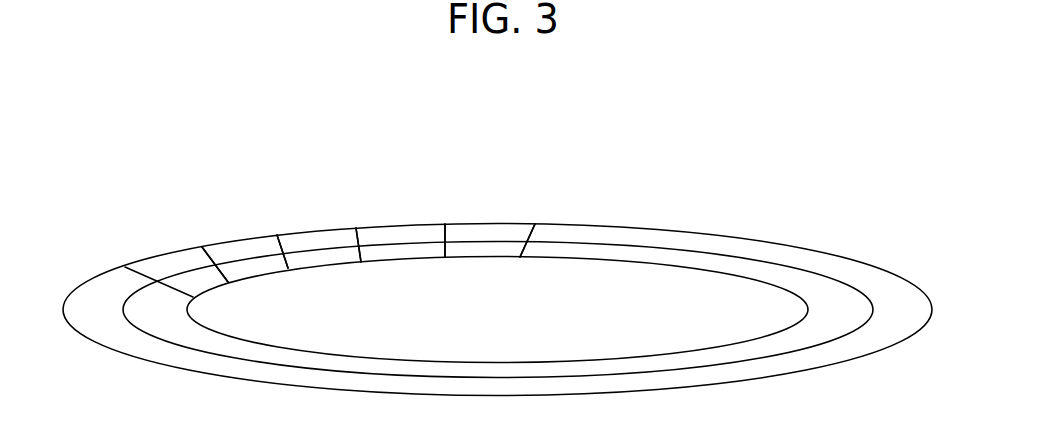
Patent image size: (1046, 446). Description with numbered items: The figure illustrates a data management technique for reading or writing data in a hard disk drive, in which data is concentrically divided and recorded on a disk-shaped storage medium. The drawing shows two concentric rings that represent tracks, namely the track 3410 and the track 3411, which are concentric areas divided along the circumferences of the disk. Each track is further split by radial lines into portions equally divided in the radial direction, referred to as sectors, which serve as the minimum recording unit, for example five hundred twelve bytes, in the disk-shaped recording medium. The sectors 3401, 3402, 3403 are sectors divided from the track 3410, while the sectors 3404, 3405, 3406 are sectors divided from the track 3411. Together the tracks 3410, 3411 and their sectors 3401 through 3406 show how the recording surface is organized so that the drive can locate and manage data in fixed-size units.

The sector 3401 is at (472, 232).
The sector 3402 is at (382, 233).
The sector 3403 is at (335, 237).
The sector 3404 is at (503, 248).
The sector 3405 is at (412, 247).
The sector 3406 is at (298, 257).
The track 3410 is at (897, 293).
The track 3411 is at (802, 282).